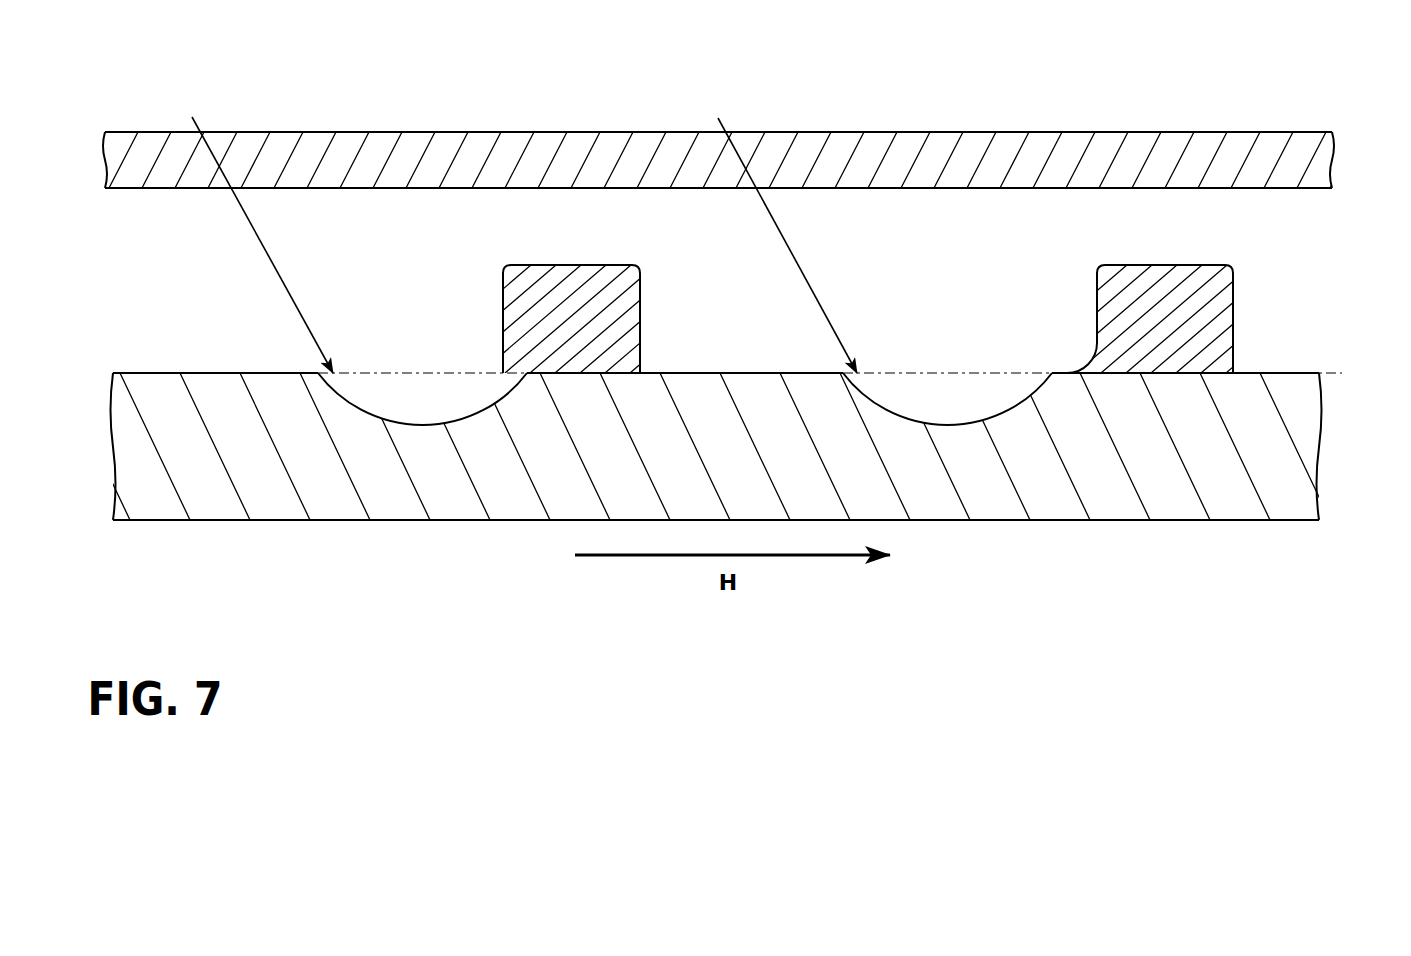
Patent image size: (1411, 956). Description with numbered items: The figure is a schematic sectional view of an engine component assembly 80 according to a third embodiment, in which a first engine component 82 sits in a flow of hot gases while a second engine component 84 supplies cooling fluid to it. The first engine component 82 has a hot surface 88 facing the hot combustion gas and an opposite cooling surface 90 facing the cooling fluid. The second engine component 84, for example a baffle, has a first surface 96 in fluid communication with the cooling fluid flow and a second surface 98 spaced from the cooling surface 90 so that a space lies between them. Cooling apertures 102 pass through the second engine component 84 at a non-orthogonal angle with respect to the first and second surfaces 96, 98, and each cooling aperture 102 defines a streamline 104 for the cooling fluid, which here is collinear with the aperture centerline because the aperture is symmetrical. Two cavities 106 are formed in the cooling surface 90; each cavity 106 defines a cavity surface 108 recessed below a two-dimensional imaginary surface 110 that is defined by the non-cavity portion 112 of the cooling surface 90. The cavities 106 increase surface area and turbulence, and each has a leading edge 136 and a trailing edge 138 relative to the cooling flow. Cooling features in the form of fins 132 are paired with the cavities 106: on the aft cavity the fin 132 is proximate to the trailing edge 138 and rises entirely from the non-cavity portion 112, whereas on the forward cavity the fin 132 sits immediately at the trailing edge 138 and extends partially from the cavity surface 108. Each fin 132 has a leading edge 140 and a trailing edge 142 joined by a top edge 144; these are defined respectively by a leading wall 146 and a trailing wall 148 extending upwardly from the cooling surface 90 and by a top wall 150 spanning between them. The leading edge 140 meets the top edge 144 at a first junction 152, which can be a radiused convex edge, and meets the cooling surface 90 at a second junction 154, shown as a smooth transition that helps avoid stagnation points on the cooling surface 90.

The engine component assembly 80 is at (232, 52).
The first engine component 82 is at (1249, 528).
The second engine component 84 is at (1346, 174).
The hot surface 88 is at (140, 522).
The cooling surface 90 is at (138, 370).
The first surface 96 is at (127, 132).
The second surface 98 is at (120, 188).
The cooling aperture 102 is at (247, 148).
The streamline 104 is at (247, 220).
The cavity 106 is at (393, 432).
The cavity surface 108 is at (357, 410).
The two-dimensional imaginary surface 110 is at (1342, 368).
The non-cavity portion 112 is at (662, 372).
The fin 132 is at (558, 262).
The leading edge 136 is at (318, 372).
The trailing edge 138 is at (523, 370).
The leading edge 140 is at (1092, 290).
The trailing edge 142 is at (1243, 287).
The top edge 144 is at (1125, 260).
The leading wall 146 is at (1097, 307).
The trailing wall 148 is at (1235, 291).
The top wall 150 is at (1189, 266).
The first junction 152 is at (1096, 265).
The second junction 154 is at (1078, 357).